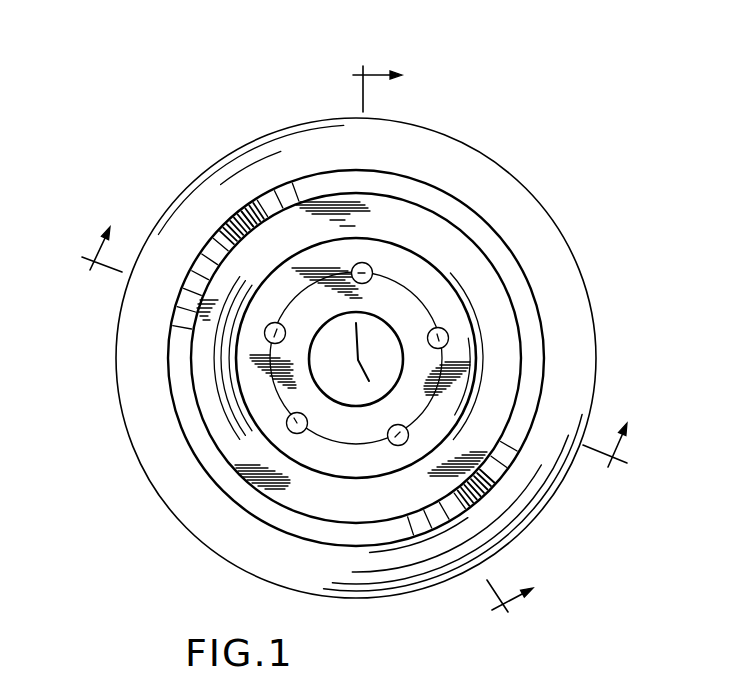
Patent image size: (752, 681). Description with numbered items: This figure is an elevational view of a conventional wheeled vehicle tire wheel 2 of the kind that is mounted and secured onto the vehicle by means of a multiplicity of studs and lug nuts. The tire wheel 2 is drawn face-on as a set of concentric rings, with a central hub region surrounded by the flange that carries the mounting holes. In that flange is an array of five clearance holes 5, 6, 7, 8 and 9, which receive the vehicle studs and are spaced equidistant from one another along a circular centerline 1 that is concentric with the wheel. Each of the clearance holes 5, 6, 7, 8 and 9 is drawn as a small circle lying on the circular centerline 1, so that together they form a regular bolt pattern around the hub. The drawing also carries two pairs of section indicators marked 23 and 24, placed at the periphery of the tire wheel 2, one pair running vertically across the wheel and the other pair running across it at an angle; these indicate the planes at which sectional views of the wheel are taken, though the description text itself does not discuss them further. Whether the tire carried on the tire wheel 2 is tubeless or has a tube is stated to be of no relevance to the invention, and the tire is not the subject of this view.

The circular centerline 1 is at (430, 310).
The tire wheel 2 is at (252, 265).
The clearance hole 5 is at (372, 266).
The clearance hole 6 is at (449, 337).
The clearance hole 7 is at (399, 446).
The clearance hole 8 is at (289, 430).
The clearance hole 9 is at (265, 337).
The section line 23- 23 is at (432, 356).
The section line 24- 24 is at (352, 355).